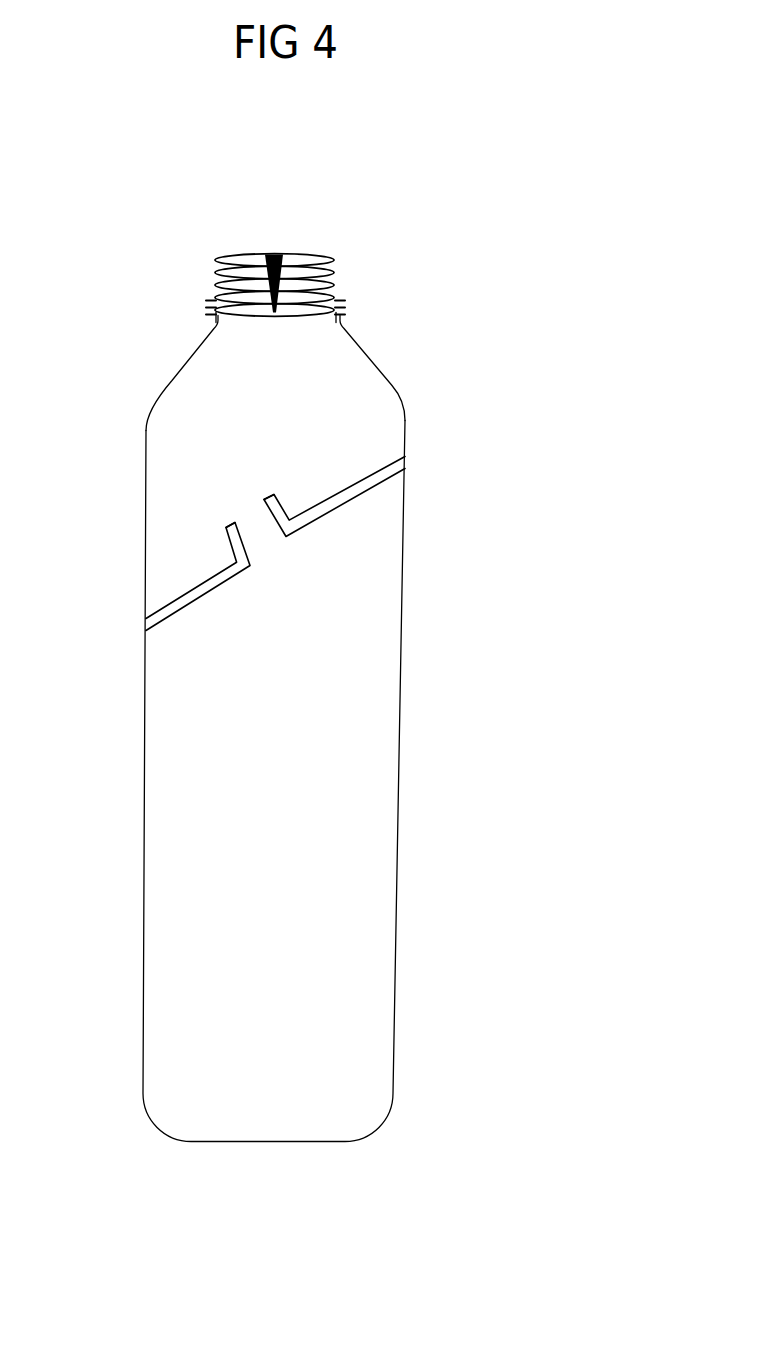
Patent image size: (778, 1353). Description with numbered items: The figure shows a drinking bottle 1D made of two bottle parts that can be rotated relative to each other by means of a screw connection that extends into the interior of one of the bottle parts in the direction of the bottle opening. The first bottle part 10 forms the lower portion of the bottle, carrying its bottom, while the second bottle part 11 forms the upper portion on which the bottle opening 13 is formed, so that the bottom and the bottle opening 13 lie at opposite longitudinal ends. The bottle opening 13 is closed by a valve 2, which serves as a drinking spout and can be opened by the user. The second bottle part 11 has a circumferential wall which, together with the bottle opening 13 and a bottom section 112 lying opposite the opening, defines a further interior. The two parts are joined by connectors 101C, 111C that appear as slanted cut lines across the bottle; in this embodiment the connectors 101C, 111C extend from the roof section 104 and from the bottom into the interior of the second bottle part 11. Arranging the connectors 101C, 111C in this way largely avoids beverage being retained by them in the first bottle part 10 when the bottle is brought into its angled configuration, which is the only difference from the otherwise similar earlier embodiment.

The drinking bottle 1D is at (561, 413).
The valve 2 is at (199, 254).
The first bottle part 10 is at (402, 631).
The second bottle part 11 is at (406, 420).
The bottle opening 13 is at (343, 320).
The roof section 104 is at (357, 496).
The connector 101C is at (286, 515).
The bottom section 112 is at (175, 600).
The connector 111C is at (231, 546).